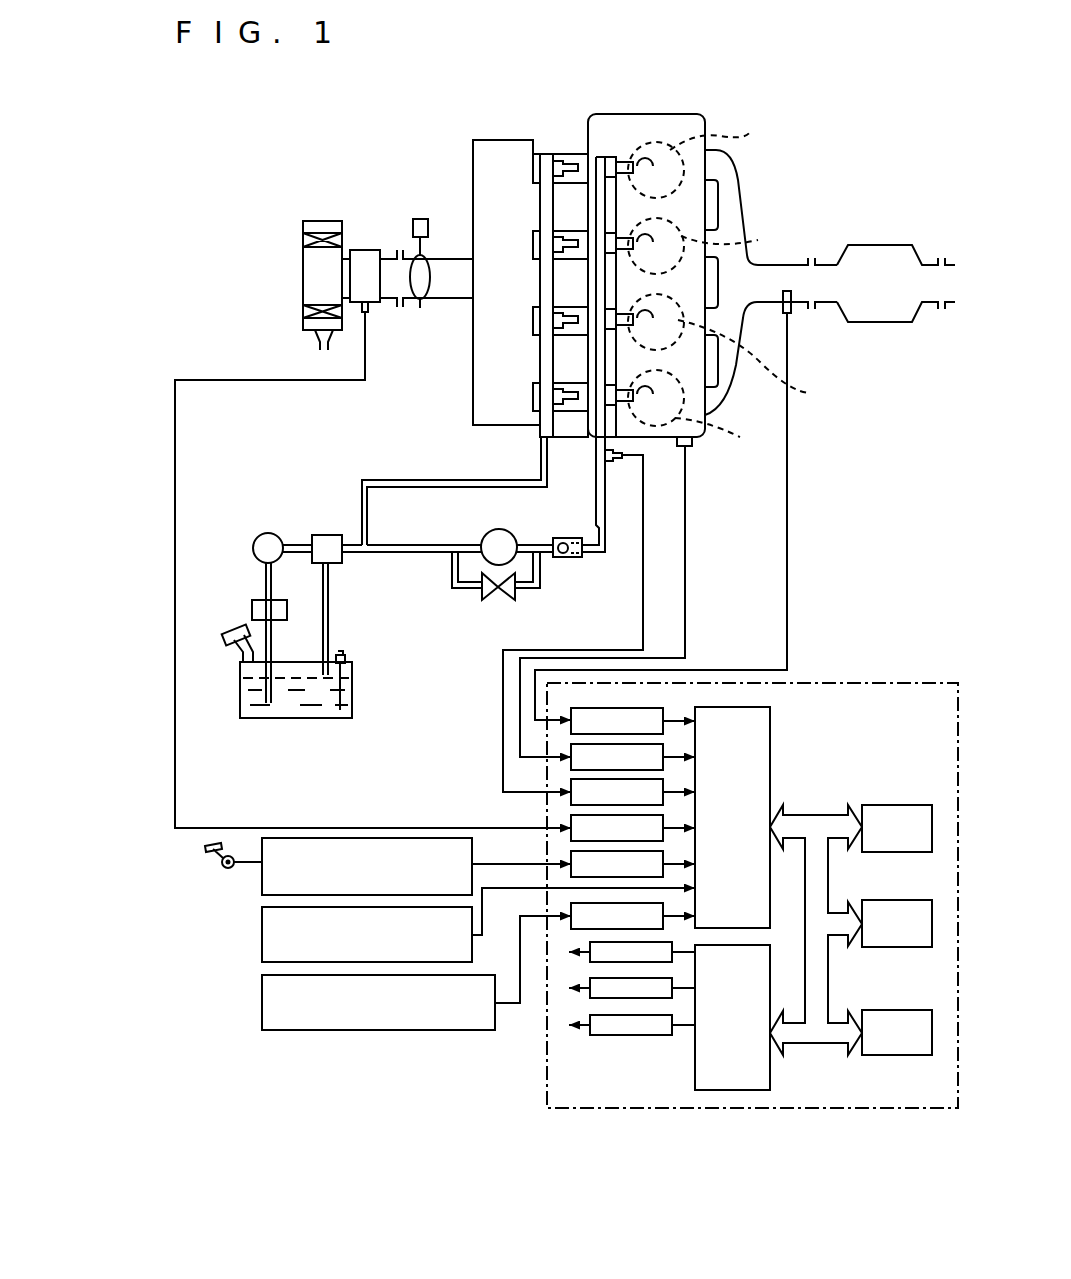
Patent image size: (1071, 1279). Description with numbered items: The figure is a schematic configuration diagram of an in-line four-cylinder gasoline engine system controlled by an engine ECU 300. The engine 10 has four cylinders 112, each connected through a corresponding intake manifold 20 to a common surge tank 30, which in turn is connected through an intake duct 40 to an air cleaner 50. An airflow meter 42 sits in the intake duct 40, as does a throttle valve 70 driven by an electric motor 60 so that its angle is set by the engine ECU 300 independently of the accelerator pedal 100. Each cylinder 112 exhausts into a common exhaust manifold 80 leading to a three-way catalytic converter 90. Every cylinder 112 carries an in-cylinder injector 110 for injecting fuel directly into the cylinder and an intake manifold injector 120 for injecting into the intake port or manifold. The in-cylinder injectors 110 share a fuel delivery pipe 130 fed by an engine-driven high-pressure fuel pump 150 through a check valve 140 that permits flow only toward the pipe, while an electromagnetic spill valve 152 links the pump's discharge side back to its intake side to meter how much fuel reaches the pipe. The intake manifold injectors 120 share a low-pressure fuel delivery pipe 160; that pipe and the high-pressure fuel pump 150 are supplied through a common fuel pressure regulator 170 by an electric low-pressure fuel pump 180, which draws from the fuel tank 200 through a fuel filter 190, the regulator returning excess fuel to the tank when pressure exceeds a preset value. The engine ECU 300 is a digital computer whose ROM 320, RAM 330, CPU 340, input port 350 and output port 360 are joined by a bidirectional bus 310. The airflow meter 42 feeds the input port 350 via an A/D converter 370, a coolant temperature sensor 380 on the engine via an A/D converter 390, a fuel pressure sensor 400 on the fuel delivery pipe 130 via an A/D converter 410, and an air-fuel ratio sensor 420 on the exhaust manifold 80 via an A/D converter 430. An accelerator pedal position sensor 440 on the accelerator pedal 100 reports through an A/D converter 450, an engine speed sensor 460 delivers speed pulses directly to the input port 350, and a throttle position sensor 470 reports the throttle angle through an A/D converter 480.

The engine 10 is at (703, 112).
The intake manifold 20 is at (546, 153).
The surge tank 30 is at (492, 138).
The intake duct 40 is at (456, 259).
The airflow meter 42 is at (365, 250).
The air cleaner 50 is at (303, 280).
The electric motor 60 is at (417, 218).
The throttle valve 70 is at (425, 287).
The exhaust manifold 80 is at (748, 189).
The three-way catalytic converter 90 is at (880, 244).
The accelerator pedal 100 is at (207, 865).
The in-cylinder injector 110 is at (656, 284).
The cylinder 112 is at (760, 282).
The intake manifold injector 120 is at (553, 396).
The fuel delivery pipe 130 is at (599, 156).
The check valve 140 is at (573, 560).
The high-pressure fuel pump 150 is at (481, 535).
The electromagnetic spill valve 152 is at (500, 600).
The fuel delivery pipe 160 is at (541, 440).
The fuel pressure regulator 170 is at (327, 534).
The low-pressure fuel pump 180 is at (269, 532).
The fuel filter 190 is at (255, 604).
The fuel tank 200 is at (295, 719).
The engine ECU 300 is at (904, 683).
The bidirectional bus 310 is at (812, 815).
The ROM 320 is at (890, 805).
The RAM 330 is at (890, 900).
The CPU 340 is at (890, 1010).
The input port 350 is at (772, 731).
The output port 360 is at (772, 1078).
The A/D converter 370 is at (562, 825).
The coolant temperature sensor 380 is at (690, 448).
The A/D converter 390 is at (562, 754).
The fuel pressure sensor 400 is at (622, 462).
The A/D converter 410 is at (562, 789).
The air-fuel ratio sensor 420 is at (793, 312).
The A/D converter 430 is at (562, 718).
The accelerator pedal position sensor 440 is at (262, 880).
The A/D converter 450 is at (562, 861).
The engine speed sensor 460 is at (262, 935).
The throttle position sensor 470 is at (262, 1000).
The A/D converter 480 is at (571, 928).